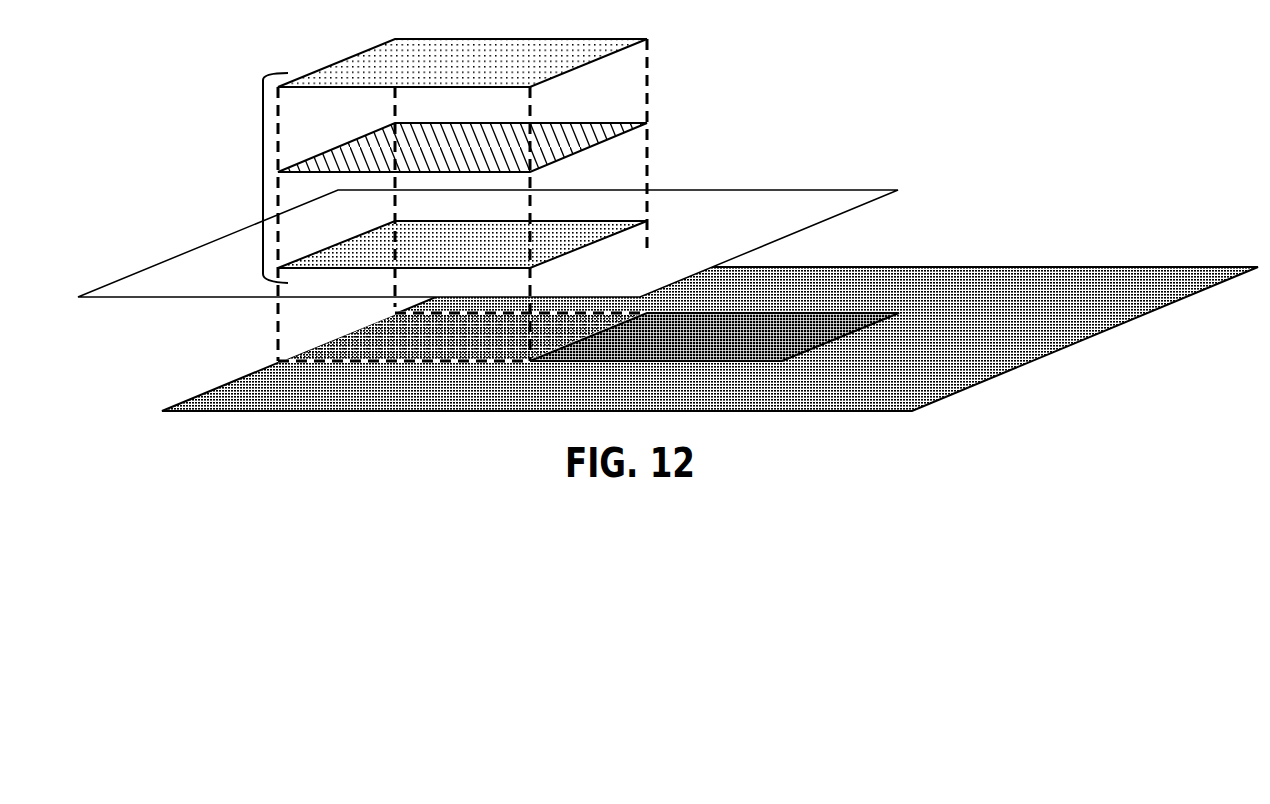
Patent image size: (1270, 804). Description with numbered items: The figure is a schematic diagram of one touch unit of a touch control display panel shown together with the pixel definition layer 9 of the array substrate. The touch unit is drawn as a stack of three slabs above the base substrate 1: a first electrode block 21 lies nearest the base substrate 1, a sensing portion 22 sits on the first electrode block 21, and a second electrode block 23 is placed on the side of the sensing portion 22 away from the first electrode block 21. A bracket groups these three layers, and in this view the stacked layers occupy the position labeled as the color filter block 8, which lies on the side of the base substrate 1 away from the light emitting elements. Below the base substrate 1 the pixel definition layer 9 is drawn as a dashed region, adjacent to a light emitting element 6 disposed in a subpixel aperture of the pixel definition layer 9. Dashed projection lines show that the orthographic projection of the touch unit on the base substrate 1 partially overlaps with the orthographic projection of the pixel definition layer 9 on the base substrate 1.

The base substrate 1 is at (488, 243).
The light emitting element 6 is at (714, 337).
The color filter block 8 is at (263, 178).
The pixel definition layer 9 is at (462, 337).
The first electrode block 21 is at (462, 244).
The sensing portion 22 is at (462, 147).
The second electrode block 23 is at (462, 63).